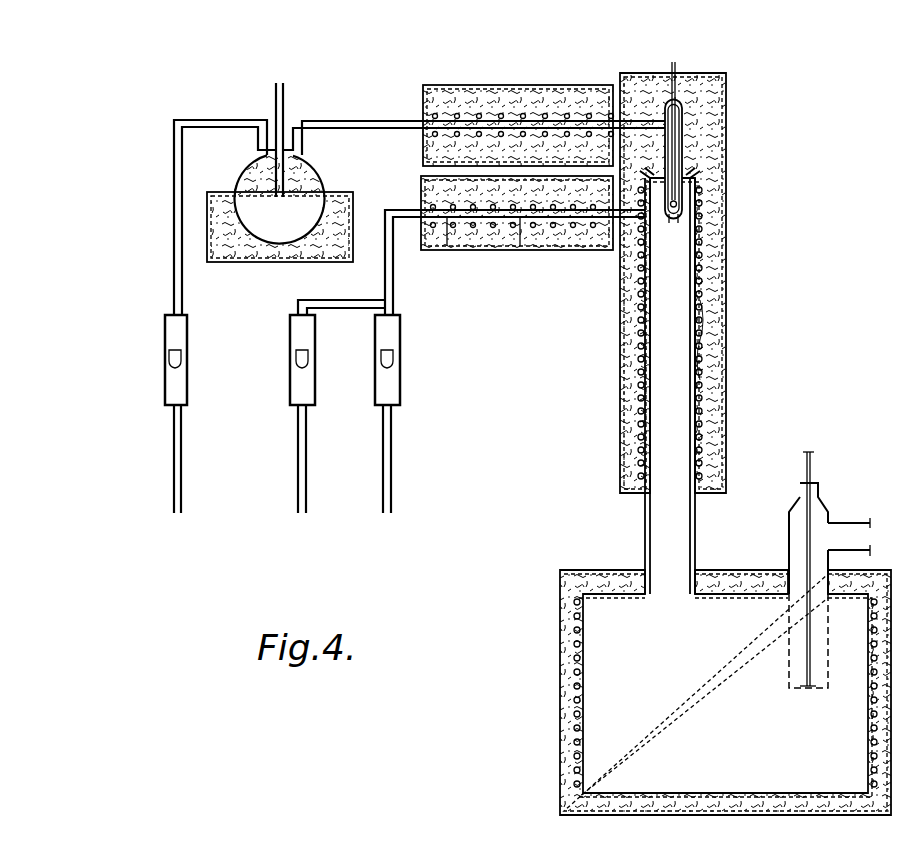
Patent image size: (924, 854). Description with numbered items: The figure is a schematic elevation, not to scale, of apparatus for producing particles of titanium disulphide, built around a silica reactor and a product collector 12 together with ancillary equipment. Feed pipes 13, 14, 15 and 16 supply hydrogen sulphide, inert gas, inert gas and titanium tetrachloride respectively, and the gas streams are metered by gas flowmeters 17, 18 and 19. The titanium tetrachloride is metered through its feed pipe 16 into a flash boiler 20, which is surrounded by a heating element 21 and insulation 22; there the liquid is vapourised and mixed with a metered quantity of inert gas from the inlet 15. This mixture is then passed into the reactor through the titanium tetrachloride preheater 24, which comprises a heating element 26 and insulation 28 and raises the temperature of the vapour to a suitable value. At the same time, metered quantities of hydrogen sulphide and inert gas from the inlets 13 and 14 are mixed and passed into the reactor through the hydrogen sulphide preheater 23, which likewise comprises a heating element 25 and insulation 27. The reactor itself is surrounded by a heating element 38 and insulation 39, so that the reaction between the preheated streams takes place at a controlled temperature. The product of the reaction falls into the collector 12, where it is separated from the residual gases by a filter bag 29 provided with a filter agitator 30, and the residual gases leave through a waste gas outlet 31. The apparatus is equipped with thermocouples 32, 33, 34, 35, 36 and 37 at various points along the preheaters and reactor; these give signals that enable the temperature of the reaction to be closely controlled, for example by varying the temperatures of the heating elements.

The product collector 12 is at (677, 690).
The feed pipe 13 is at (391, 475).
The feed pipe 14 is at (305, 475).
The feed pipe 15 is at (175, 475).
The feed pipe 16 is at (276, 93).
The gas flowmeter 17 is at (400, 372).
The gas flowmeter 18 is at (314, 368).
The gas flowmeter 19 is at (187, 368).
The flash boiler 20 is at (296, 230).
The heating element 21 is at (340, 209).
The insulation 22 is at (244, 254).
The hydrogen sulphide preheater 23 is at (517, 254).
The titanium tetrachloride preheater 24 is at (520, 112).
The heating element 25 is at (448, 237).
The heating element 26 is at (472, 118).
The insulation 27 is at (502, 241).
The insulation 28 is at (482, 104).
The filter bag 29 is at (788, 626).
The filter agitator 30 is at (805, 650).
The waste gas outlet 31 is at (870, 544).
The thermocouple 32 is at (520, 237).
The thermocouple 33 is at (522, 120).
The thermocouple 34 is at (645, 213).
The thermocouple 35 is at (700, 215).
The thermocouple 36 is at (698, 283).
The thermocouple 37 is at (693, 455).
The heating element 38 is at (697, 397).
The insulation 39 is at (715, 422).